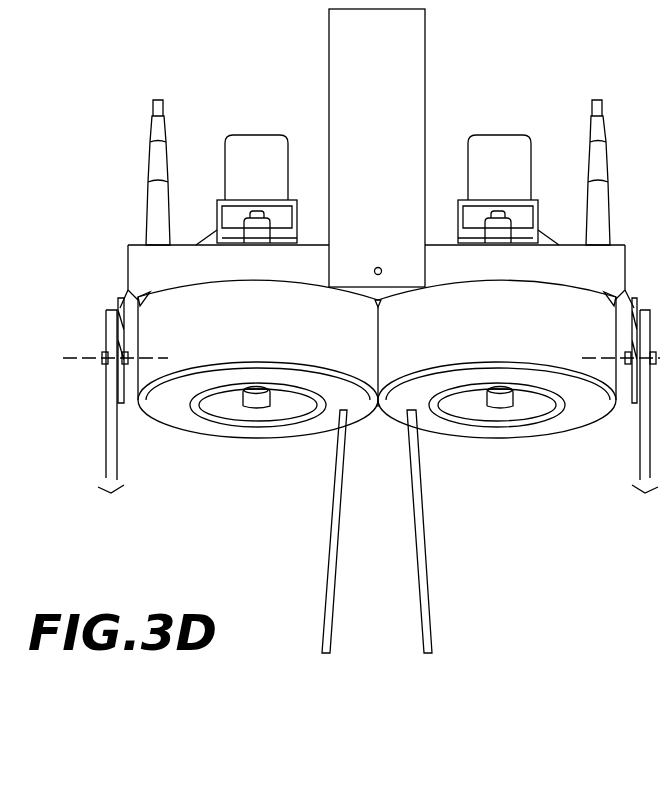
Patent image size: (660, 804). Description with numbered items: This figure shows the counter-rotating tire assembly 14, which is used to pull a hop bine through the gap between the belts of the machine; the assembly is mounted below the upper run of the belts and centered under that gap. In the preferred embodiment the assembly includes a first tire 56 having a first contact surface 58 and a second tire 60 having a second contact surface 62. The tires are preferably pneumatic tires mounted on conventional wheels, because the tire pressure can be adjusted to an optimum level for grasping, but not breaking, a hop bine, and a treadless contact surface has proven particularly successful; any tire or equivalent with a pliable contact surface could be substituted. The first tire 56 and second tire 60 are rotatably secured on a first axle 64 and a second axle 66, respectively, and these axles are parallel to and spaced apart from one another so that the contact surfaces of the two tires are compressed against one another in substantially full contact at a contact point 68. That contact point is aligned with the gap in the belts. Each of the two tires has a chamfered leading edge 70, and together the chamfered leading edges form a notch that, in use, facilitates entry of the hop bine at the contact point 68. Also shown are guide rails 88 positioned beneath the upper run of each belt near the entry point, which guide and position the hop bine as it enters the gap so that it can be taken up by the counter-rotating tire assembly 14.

The counter-rotating tire assembly 14 is at (216, 72).
The first tire 56 is at (180, 422).
The first contact surface 58 is at (282, 340).
The second tire 60 is at (574, 422).
The second contact surface 62 is at (512, 340).
The first axle 64 is at (252, 408).
The second axle 66 is at (503, 408).
The contact point 68 is at (378, 408).
The chamfered leading edge 70 is at (326, 377).
The guide rails 88 is at (333, 590).